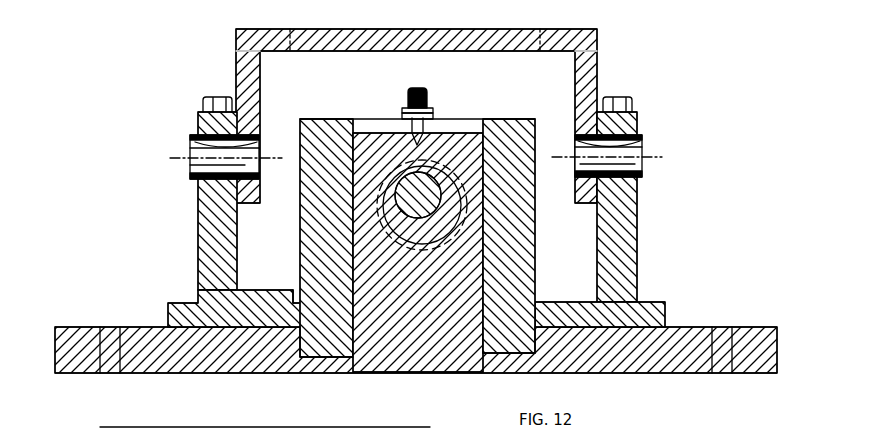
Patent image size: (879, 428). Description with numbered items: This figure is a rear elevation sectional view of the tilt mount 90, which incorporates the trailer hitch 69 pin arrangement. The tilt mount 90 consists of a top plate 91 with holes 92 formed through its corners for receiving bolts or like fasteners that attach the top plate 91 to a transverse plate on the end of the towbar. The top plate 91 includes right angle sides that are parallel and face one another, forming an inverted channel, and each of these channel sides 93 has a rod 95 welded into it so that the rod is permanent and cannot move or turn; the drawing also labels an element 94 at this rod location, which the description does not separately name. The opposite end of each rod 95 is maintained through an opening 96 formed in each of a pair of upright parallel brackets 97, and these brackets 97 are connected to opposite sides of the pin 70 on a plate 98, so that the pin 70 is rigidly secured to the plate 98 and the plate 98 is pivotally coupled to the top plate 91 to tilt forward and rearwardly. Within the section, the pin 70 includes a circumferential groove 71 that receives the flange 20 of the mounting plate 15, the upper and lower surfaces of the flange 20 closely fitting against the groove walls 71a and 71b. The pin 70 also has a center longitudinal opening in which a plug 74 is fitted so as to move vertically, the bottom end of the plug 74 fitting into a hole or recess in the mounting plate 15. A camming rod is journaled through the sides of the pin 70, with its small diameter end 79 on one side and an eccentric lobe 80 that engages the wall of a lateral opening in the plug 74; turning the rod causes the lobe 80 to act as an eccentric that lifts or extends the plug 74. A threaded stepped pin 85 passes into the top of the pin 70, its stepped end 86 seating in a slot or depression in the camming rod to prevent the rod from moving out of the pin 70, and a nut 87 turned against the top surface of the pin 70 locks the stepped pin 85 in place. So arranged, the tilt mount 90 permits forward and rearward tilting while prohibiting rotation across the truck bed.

The mounting plate 15 is at (688, 362).
The flange 20 is at (545, 345).
The trailer hitch 69 is at (405, 214).
The pin 70 is at (485, 258).
The circumferential groove 71 is at (413, 258).
The groove wall 71a is at (296, 300).
The groove wall 71b is at (300, 372).
The plug 74 is at (299, 240).
The small diameter end 79 is at (433, 177).
The eccentric lobe 80 is at (445, 227).
The threaded stepped pin 85 is at (410, 100).
The stepped end 86 is at (435, 133).
The nut 87 is at (427, 110).
The tilt mount 90 is at (378, 214).
The top plate 91 is at (429, 29).
The holes 92 is at (290, 29).
The channel sides 93 is at (236, 62).
The bushing 94 is at (402, 158).
The rod 95 is at (203, 152).
The opening 96 is at (200, 190).
The upright parallel brackets 97 is at (198, 240).
The plate 98 is at (198, 290).